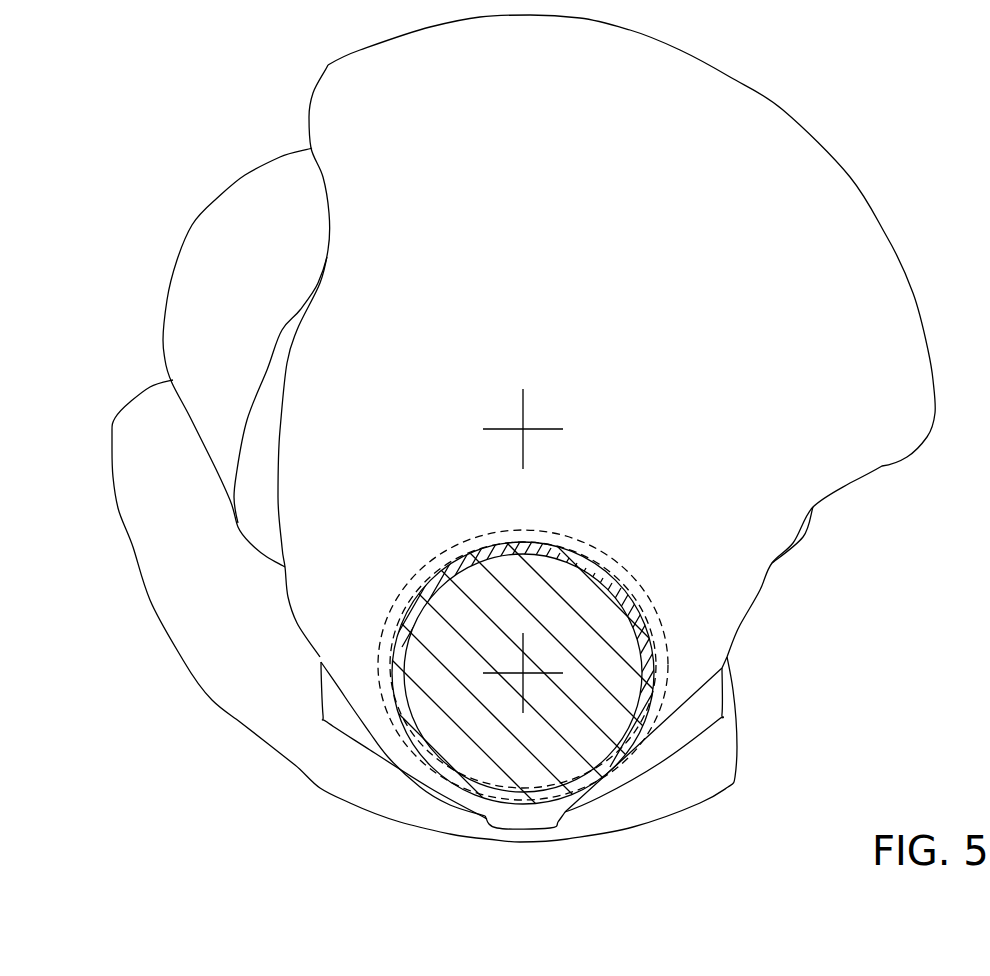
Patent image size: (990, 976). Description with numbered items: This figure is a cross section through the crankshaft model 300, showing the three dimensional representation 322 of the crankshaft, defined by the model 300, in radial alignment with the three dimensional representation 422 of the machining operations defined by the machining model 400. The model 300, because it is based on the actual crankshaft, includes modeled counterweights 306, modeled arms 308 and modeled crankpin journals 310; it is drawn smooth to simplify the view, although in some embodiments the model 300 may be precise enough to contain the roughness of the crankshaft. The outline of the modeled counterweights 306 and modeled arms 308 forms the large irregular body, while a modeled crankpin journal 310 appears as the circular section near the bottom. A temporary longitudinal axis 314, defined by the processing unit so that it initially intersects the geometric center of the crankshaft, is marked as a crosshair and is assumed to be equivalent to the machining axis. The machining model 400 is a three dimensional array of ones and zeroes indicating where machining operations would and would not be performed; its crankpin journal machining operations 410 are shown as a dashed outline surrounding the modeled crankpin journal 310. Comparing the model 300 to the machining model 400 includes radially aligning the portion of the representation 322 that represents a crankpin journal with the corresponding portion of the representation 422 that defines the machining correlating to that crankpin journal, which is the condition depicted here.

The model 300 is at (627, 422).
The three dimensional representation of the crankshaft 322 is at (873, 523).
The modeled counterweights 306 is at (753, 127).
The modeled arms 308 is at (205, 243).
The modeled crankpin journals 310 is at (573, 537).
The temporary longitudinal axis 314 is at (523, 430).
The machining model 400 is at (503, 635).
The three dimensional representation of the machining operations 422 is at (373, 583).
The crankpin journal machining operations 410 is at (617, 542).